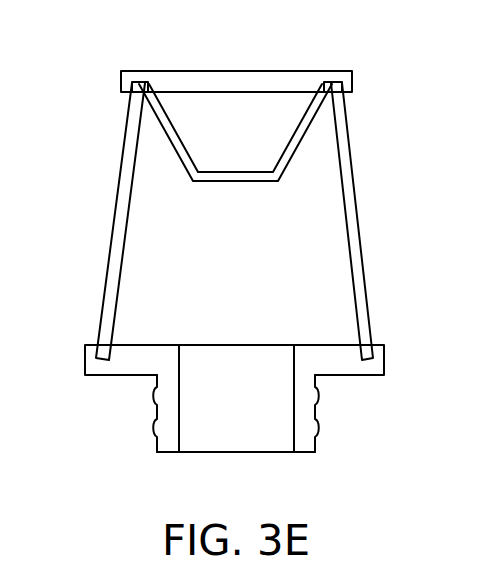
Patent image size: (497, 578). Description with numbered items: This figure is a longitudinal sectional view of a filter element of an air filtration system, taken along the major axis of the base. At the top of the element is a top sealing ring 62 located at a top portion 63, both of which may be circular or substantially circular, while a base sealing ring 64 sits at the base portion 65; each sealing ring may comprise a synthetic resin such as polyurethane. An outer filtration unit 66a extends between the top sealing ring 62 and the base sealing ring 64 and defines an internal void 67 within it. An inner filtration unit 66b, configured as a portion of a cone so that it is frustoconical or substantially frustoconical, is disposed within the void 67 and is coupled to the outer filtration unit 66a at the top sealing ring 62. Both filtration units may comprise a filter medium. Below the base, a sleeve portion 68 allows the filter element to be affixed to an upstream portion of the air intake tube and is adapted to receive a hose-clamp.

The top sealing ring 62 is at (243, 71).
The top portion 63 is at (120, 78).
The base sealing ring 64 is at (85, 360).
The base portion 65 is at (384, 360).
The outer filtration unit 66a is at (362, 228).
The inner filtration unit 66b is at (245, 183).
The internal void 67 is at (254, 300).
The sleeve portion 68 is at (317, 412).